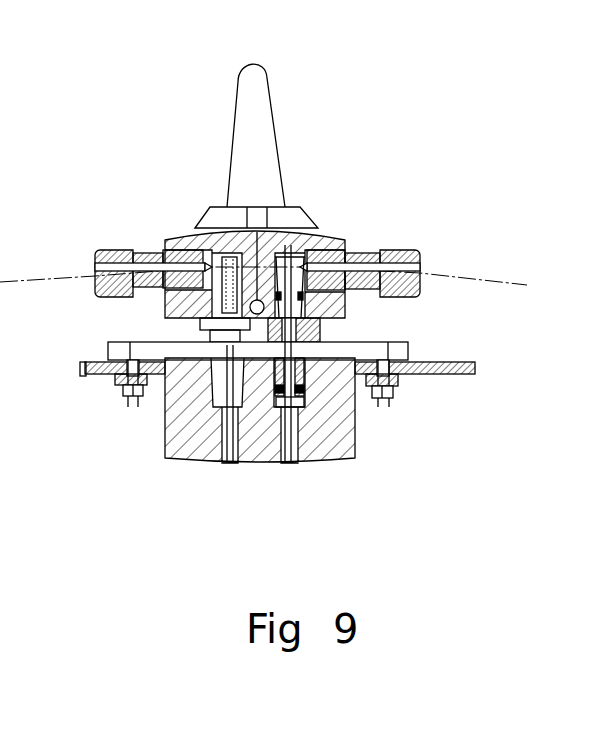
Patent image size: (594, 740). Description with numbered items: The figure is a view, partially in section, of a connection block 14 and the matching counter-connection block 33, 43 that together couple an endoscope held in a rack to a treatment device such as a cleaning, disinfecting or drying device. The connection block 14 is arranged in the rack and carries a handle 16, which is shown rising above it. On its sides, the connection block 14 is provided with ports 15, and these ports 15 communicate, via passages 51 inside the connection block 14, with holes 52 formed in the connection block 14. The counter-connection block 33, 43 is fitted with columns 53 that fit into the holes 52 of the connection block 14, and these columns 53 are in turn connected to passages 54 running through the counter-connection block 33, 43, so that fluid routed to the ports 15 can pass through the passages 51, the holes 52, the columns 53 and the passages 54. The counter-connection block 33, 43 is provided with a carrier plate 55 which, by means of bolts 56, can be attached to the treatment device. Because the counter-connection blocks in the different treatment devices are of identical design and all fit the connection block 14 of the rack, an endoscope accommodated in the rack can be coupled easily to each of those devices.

The connection block 14 is at (356, 232).
The ports 15 is at (113, 248).
The actuating lever 16 is at (258, 88).
The passages 51 is at (209, 255).
The holes 52 is at (315, 237).
The columns 53 is at (195, 334).
The passages 54 is at (237, 455).
The carrier plate 55 is at (400, 350).
The bolts 56 is at (125, 388).
The counter-connection block 33 is at (206, 451).
The counter-connection block 43 is at (160, 445).